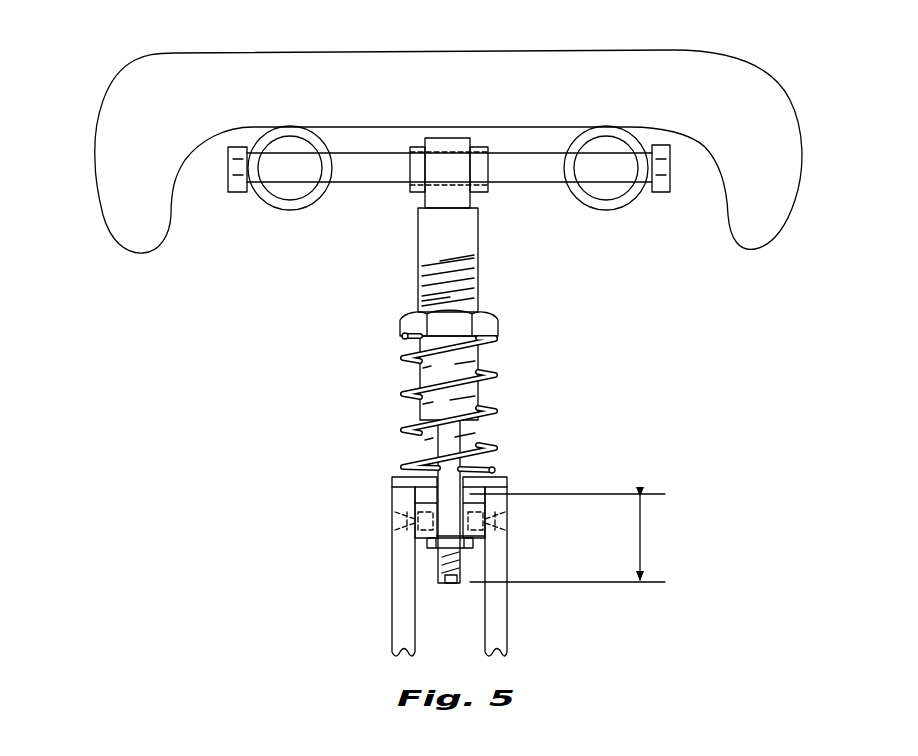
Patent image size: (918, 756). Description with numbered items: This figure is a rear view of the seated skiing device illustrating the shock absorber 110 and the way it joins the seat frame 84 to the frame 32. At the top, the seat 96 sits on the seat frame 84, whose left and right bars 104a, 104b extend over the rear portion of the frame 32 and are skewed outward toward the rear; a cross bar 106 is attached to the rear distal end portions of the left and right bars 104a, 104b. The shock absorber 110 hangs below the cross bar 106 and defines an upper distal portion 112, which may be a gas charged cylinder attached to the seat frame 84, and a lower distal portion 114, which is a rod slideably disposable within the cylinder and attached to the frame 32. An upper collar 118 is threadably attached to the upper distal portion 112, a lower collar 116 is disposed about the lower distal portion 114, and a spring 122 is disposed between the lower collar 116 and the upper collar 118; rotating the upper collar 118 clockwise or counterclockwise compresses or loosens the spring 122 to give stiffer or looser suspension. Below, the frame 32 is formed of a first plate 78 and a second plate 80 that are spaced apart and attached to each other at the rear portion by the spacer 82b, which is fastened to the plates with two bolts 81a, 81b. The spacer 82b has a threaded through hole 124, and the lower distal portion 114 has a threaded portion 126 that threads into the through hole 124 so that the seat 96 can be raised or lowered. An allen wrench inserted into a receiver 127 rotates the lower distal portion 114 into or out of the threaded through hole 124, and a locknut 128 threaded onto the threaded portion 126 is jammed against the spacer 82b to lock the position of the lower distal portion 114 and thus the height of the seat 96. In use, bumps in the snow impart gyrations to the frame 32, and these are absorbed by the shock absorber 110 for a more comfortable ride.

The seat 96 is at (693, 50).
The seat frame 84 is at (226, 214).
The left bar 104a is at (273, 202).
The right bar 104b is at (620, 200).
The cross bar 106 is at (352, 177).
The shock absorber 110 is at (372, 323).
The upper distal portion 112 is at (484, 244).
The upper collar 118 is at (496, 327).
The spring 122 is at (496, 378).
The lower collar 116 is at (503, 476).
The lower distal portion 114 is at (429, 493).
The bolt 81a is at (500, 520).
The bolt 81b is at (395, 520).
The threaded through hole 124 is at (428, 539).
The locknut 128 is at (433, 539).
The spacer 82b is at (475, 536).
The threaded portion 126 is at (641, 536).
The receiver 127 is at (452, 583).
The frame 32 is at (420, 571).
The second plate 80 is at (402, 625).
The first plate 78 is at (502, 625).